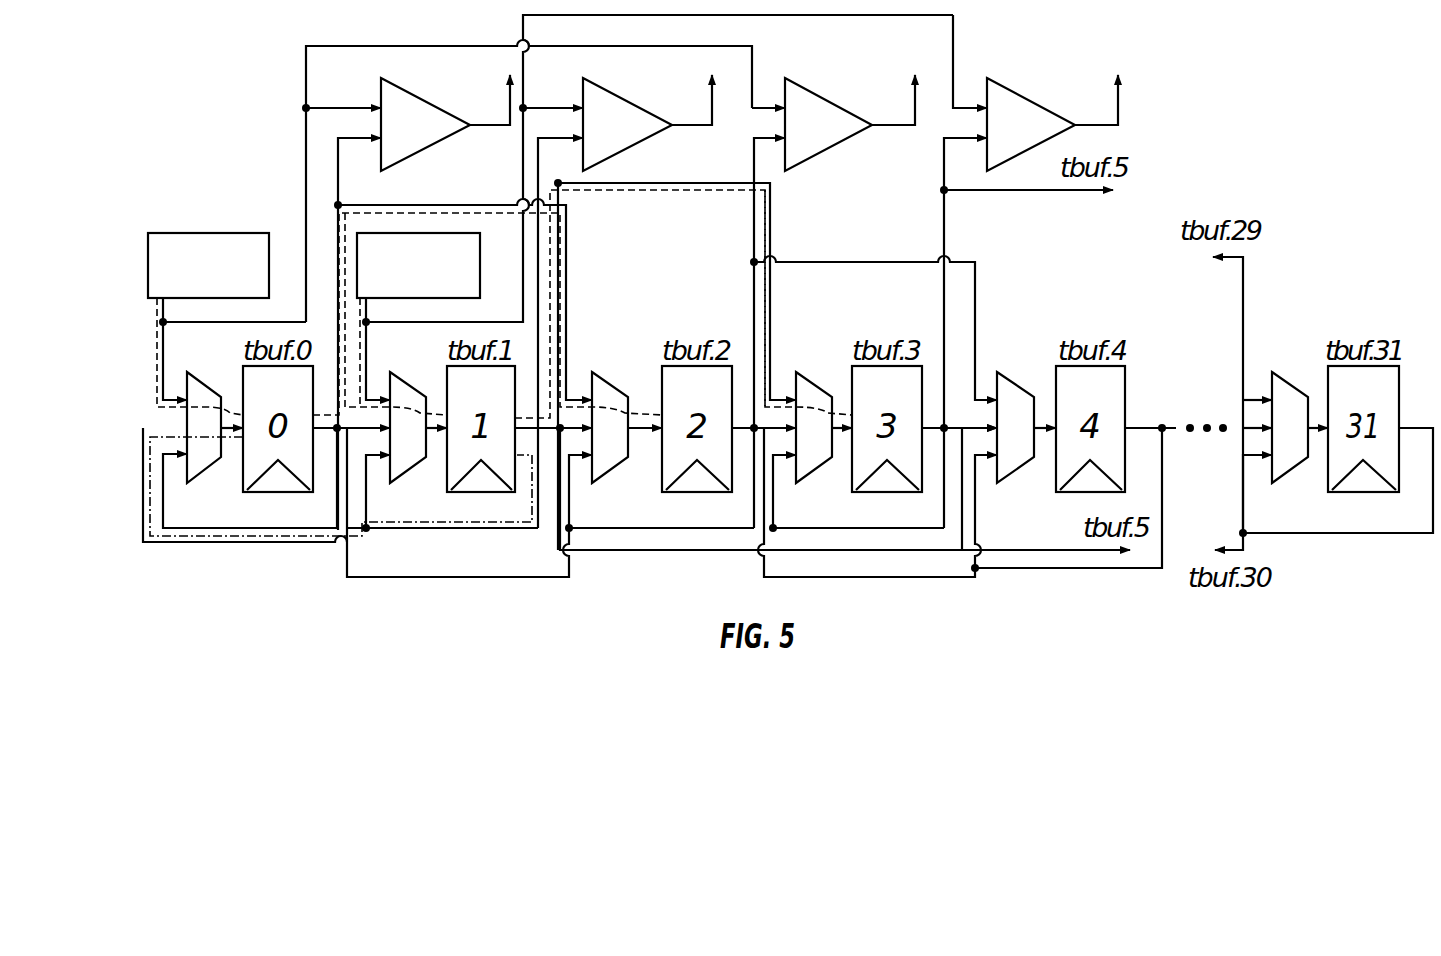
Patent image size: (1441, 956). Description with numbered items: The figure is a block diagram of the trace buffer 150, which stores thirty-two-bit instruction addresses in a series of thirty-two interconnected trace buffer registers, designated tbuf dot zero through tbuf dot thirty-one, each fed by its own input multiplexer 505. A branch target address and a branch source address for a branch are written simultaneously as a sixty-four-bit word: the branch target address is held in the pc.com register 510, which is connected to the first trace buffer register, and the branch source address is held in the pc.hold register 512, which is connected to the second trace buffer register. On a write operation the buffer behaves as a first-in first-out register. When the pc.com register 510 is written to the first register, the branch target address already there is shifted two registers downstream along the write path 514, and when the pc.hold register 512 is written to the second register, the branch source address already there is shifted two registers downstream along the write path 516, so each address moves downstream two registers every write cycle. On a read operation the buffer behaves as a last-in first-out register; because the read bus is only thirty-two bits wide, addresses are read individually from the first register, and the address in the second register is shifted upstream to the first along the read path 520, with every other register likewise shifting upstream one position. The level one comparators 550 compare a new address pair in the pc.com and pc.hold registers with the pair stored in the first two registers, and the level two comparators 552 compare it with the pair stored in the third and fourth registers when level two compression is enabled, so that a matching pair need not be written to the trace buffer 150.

The trace buffer 150 is at (1205, 92).
The input multiplexer 505 is at (205, 477).
The pc.com register 510 is at (207, 233).
The pc.hold register 512 is at (480, 264).
The write path 514 is at (157, 370).
The write path 516 is at (768, 232).
The read path 520 is at (198, 538).
The level one comparator 550 is at (427, 97).
The level two comparator 552 is at (833, 97).